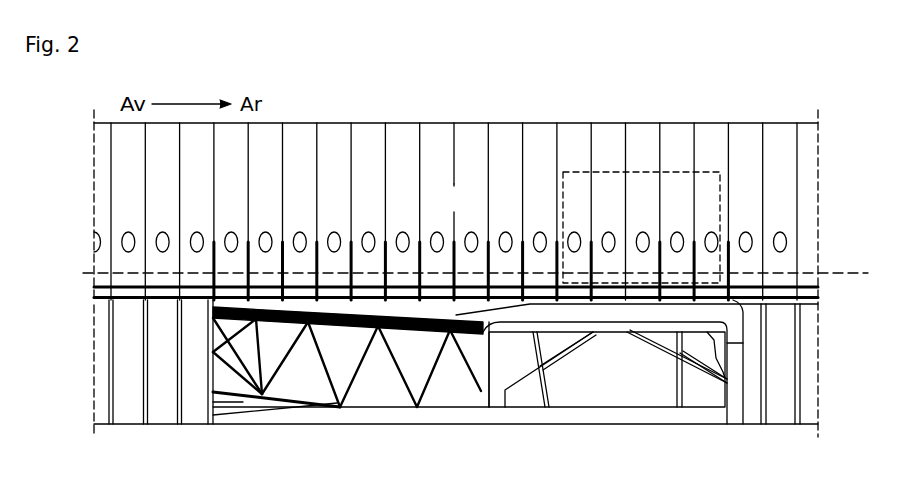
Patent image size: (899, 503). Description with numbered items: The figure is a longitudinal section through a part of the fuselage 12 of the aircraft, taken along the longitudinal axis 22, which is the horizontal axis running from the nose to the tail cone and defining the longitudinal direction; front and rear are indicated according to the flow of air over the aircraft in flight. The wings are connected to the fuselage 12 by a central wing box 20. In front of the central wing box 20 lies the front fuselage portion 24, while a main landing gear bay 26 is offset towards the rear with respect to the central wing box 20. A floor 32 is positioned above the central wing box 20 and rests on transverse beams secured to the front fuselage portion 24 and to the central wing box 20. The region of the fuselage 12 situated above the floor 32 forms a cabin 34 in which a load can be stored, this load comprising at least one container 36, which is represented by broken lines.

The fuselage 12 is at (368, 158).
The central wing box 20 is at (310, 414).
The longitudinal axis 22 is at (841, 272).
The front fuselage portion 24 is at (211, 431).
The main landing gear bay 26 is at (608, 393).
The floor 32 is at (286, 282).
The cabin 34 is at (453, 197).
The container 36 is at (645, 165).